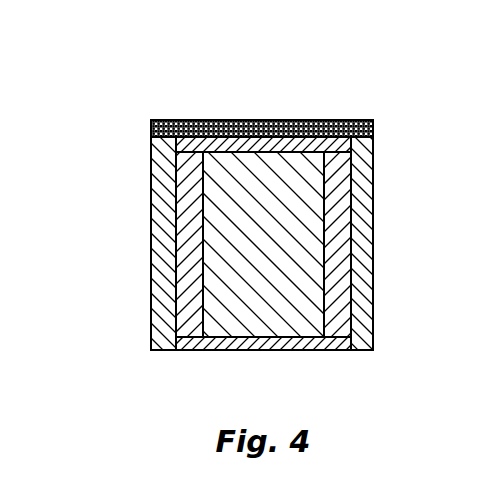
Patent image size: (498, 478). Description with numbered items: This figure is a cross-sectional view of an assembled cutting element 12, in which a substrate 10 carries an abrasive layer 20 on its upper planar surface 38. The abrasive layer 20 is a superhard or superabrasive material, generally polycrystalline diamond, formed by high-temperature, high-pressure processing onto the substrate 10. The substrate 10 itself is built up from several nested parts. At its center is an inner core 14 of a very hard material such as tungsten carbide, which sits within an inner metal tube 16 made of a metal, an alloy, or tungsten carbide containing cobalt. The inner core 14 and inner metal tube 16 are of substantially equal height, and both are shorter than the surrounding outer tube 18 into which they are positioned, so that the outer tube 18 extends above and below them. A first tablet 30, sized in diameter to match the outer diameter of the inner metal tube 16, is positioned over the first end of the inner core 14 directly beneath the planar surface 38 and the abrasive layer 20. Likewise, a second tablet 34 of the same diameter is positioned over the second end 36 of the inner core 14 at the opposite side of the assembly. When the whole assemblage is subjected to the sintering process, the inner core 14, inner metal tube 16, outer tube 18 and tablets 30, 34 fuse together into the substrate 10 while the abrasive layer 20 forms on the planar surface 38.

The substrate 10 is at (129, 181).
The cutting element 12 is at (378, 118).
The inner core 14 is at (305, 302).
The inner metal tube 16 is at (186, 260).
The outer tube 18 is at (160, 212).
The abrasive layer 20 is at (251, 128).
The first tablet 30 is at (315, 126).
The second tablet 34 is at (210, 343).
The second end of the inner core 36 is at (272, 339).
The planar surface 38 is at (201, 123).